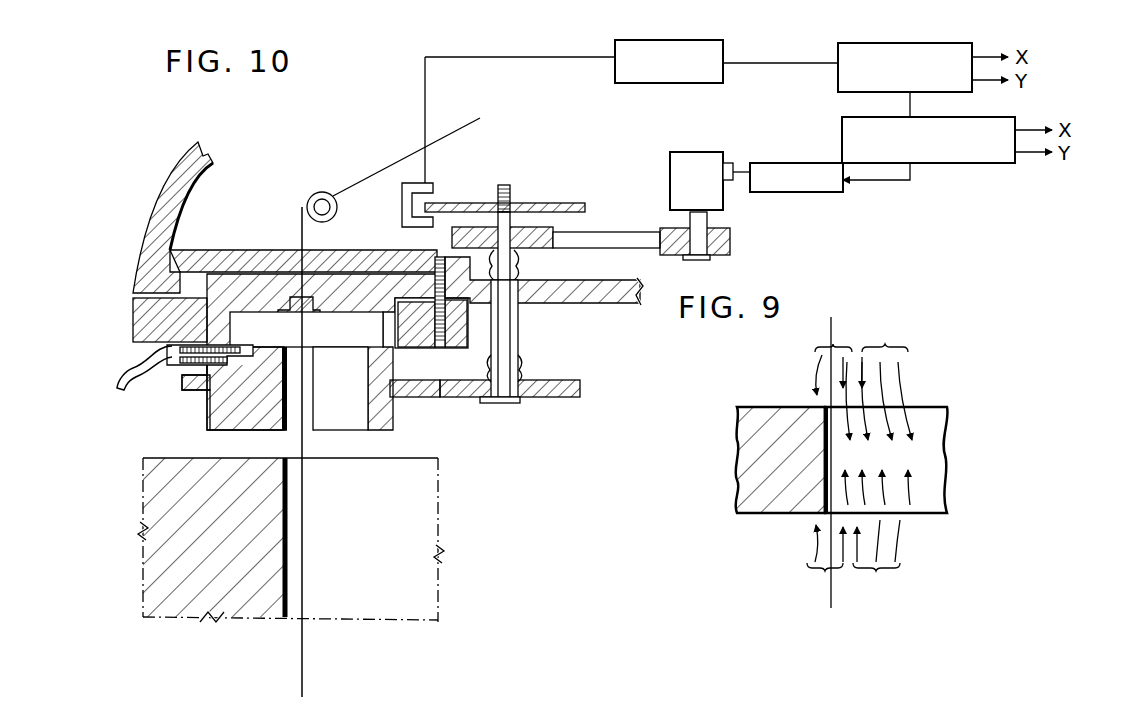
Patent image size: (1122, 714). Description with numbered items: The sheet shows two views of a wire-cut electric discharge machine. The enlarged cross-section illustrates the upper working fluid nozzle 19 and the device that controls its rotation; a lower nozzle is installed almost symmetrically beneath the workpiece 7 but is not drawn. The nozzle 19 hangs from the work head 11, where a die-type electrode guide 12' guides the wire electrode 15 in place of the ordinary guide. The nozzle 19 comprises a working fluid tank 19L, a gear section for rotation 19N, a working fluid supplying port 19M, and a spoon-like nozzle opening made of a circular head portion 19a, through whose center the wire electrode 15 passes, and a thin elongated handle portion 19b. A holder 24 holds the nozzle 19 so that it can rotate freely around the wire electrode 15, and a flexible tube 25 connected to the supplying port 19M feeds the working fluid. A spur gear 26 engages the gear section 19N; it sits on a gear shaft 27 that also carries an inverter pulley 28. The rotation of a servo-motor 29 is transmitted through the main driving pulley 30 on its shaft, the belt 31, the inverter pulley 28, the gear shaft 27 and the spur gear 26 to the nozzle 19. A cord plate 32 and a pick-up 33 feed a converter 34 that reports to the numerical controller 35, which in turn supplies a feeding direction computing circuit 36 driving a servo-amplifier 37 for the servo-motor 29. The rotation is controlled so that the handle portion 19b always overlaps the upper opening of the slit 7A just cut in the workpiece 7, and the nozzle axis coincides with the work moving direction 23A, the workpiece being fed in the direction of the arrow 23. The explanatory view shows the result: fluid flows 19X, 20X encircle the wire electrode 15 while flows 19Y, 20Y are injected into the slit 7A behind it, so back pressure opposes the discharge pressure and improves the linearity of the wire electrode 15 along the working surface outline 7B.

In FIG. 10, the workpiece 7 is at (206, 618).
In FIG. 9, the workpiece 7 is at (750, 407).
In FIG. 10, the slit 7A is at (345, 622).
In FIG. 9, the slit 7A is at (920, 412).
In FIG. 9, the curve showing the outline of the working surface 7B is at (761, 538).
In FIG. 10, the work head 11 is at (148, 210).
In FIG. 10, the die-type electrode guide 12' is at (303, 273).
In FIG. 10, the wire electrode 15 is at (303, 518).
In FIG. 9, the wire electrode 15 is at (830, 372).
In FIG. 10, the working fluid nozzle 19 is at (207, 398).
In FIG. 10, the head portion 19a is at (276, 425).
In FIG. 10, the handle portion 19b is at (358, 412).
In FIG. 10, the working fluid tank 19L is at (343, 318).
In FIG. 10, the working fluid supplying port 19M is at (182, 366).
In FIG. 10, the gear section for rotation 19N is at (403, 388).
In FIG. 9, the working fluid flows encircling the wire electrode 19X is at (836, 345).
In FIG. 9, the working fluid flows injected into the slit 19Y is at (877, 382).
In FIG. 9, the working fluid flows encircling the wire electrode 20X is at (826, 571).
In FIG. 9, the working fluid flows injected into the slit 20Y is at (877, 536).
In FIG. 10, the arrow indicating the work moving direction 23 is at (143, 548).
In FIG. 9, the arrow indicating the work moving direction 23 is at (722, 462).
In FIG. 10, the work moving direction 23A is at (286, 574).
In FIG. 10, the holder 24 is at (145, 317).
In FIG. 10, the flexible tube 25 is at (122, 374).
In FIG. 10, the spur gear 26 is at (560, 385).
In FIG. 10, the gear shaft 27 is at (505, 358).
In FIG. 10, the inverter pulley 28 is at (560, 234).
In FIG. 10, the servo-motor 29 is at (676, 152).
In FIG. 10, the main driving pulley 30 is at (718, 247).
In FIG. 10, the belt 31 is at (625, 240).
In FIG. 10, the cord plate 32 is at (448, 203).
In FIG. 10, the pick-up 33 is at (402, 207).
In FIG. 10, the converter 34 is at (615, 48).
In FIG. 10, the numerical controller 35 is at (838, 52).
In FIG. 10, the feeding direction computing circuit 36 is at (970, 160).
In FIG. 10, the servo-amplifier 37 is at (798, 163).